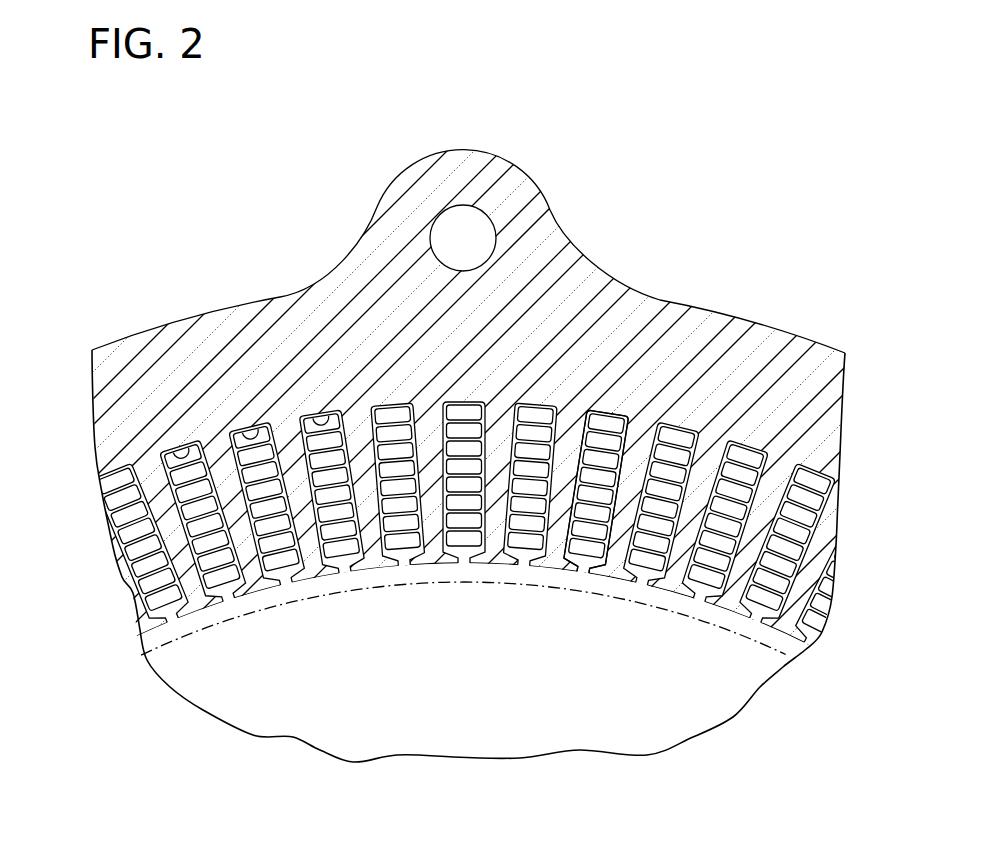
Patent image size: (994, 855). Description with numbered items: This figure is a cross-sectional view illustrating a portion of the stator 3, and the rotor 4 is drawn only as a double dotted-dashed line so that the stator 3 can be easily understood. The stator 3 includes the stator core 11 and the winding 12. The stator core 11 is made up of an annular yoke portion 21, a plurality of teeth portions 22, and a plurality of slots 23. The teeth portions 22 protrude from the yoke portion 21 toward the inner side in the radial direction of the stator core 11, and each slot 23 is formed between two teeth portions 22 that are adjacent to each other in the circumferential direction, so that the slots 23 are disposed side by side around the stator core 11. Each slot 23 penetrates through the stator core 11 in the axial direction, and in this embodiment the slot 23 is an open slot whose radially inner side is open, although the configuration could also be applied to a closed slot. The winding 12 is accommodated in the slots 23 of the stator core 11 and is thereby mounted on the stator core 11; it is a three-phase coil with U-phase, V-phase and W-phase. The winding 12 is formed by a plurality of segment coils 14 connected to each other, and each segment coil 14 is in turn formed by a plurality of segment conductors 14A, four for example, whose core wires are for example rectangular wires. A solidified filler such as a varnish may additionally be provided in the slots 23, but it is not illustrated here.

The stator 3 is at (460, 466).
The stator core 11 is at (460, 481).
The yoke portion 21 is at (157, 345).
The teeth portions 22 is at (745, 548).
The segment coil 14 is at (787, 603).
The segment conductor 14A is at (618, 473).
The winding 12 is at (133, 587).
The slot 23 is at (320, 411).
The rotor 4 is at (141, 655).